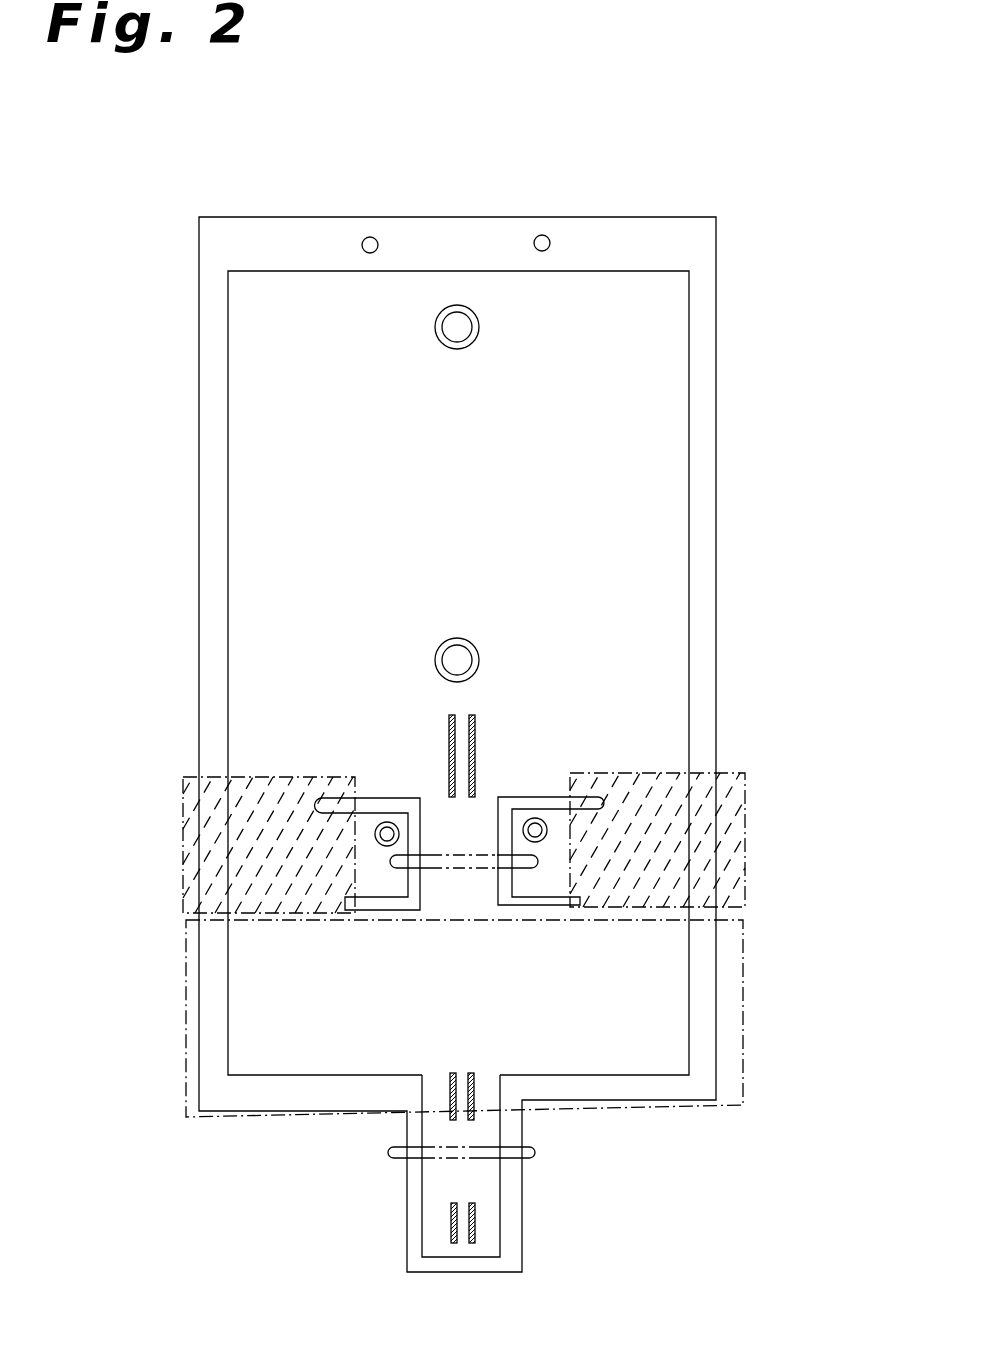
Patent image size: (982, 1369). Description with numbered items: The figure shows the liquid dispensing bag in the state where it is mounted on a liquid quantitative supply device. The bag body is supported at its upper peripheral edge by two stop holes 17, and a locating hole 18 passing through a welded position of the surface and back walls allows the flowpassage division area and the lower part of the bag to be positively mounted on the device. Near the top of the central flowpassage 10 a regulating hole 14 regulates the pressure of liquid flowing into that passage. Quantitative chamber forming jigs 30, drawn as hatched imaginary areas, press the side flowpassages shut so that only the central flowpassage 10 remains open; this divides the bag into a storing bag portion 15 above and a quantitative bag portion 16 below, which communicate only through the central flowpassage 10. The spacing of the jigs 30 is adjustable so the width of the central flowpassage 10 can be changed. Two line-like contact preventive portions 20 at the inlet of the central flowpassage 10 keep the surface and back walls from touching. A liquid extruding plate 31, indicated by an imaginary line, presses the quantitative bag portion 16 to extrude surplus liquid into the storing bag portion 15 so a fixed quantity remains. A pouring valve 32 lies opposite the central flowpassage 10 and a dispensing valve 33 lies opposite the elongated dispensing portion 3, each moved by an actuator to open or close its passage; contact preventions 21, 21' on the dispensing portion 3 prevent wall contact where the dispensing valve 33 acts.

The dispensing portion 3 is at (488, 1207).
The central flowpassage 10 is at (465, 823).
The regulating hole 14 is at (462, 658).
The storing bag portion 15 is at (662, 508).
The quantitative bag portion 16 is at (633, 1025).
The stop holes 17 is at (373, 236).
The locating hole 18 is at (462, 326).
The contact preventive portions 20 is at (477, 728).
The contact prevention 21 is at (648, 1034).
The contact prevention 21' is at (654, 1240).
The quantitative chamber forming jigs 30 is at (185, 823).
The liquid extruding plate 31 is at (183, 1101).
The pouring valve 32 is at (477, 868).
The dispensing valve 33 is at (535, 1152).